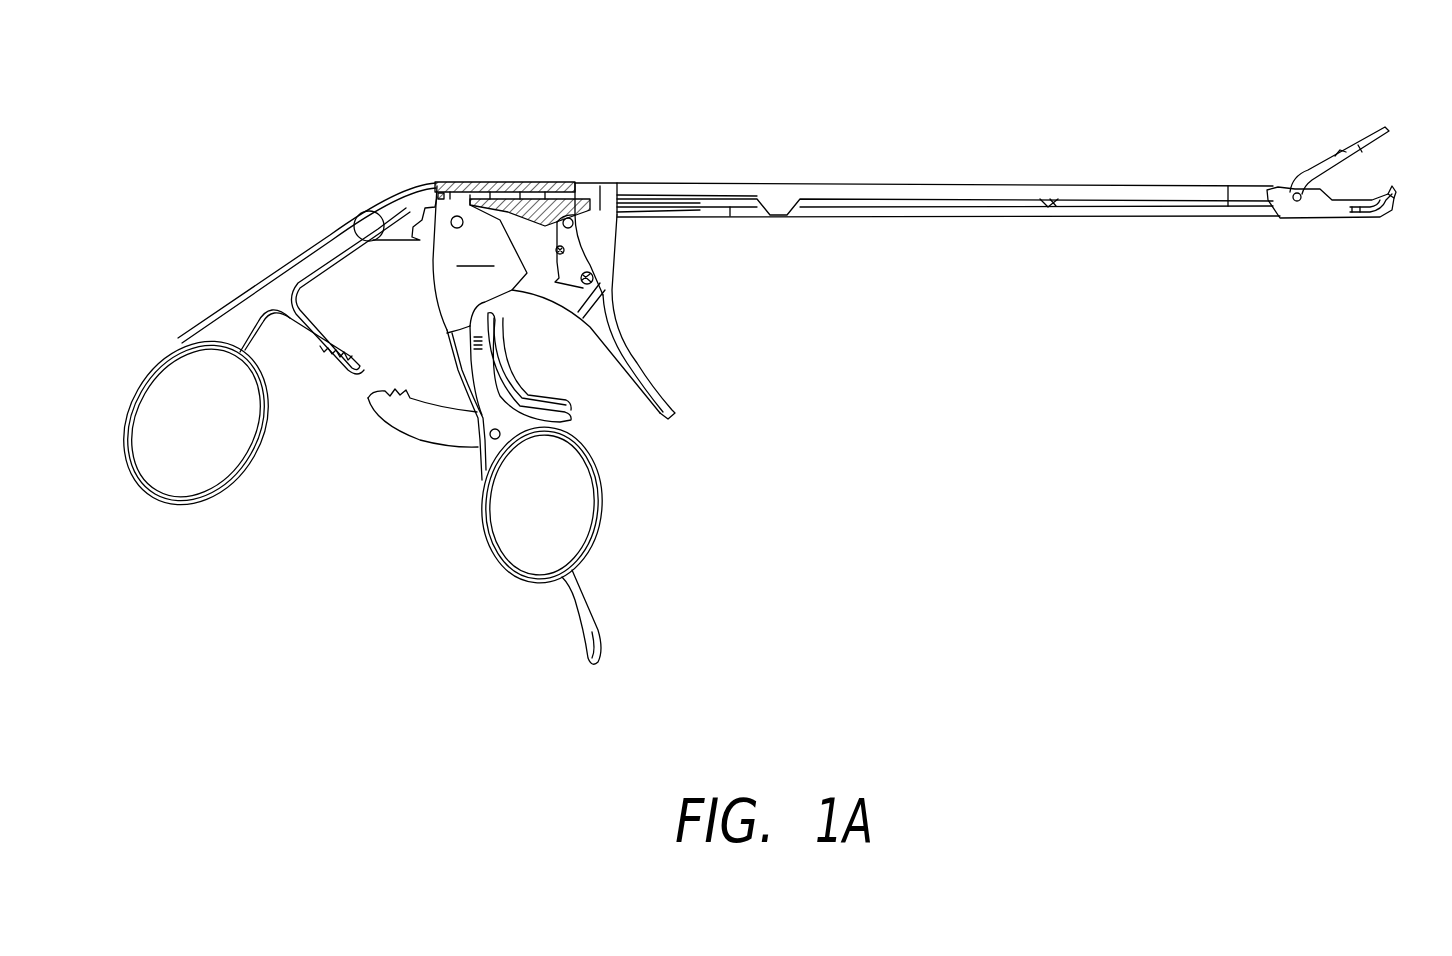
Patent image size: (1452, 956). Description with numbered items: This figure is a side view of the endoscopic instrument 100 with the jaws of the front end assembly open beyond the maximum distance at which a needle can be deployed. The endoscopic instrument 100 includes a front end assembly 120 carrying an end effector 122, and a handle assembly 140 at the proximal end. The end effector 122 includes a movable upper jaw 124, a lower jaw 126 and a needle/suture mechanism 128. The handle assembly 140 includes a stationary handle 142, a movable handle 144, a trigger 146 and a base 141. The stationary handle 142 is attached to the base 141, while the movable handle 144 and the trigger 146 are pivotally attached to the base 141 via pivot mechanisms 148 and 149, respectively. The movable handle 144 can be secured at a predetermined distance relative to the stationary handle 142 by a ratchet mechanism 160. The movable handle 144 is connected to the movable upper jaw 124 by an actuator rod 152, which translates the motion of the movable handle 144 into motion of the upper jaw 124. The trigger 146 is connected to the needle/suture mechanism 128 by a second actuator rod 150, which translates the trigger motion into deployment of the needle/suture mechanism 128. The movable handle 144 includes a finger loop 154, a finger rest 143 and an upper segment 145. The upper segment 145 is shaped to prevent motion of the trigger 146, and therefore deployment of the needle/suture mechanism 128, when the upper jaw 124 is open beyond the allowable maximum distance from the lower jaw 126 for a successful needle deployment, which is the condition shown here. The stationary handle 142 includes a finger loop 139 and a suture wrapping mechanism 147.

The endoscopic instrument 100 is at (428, 142).
The front end assembly 120 is at (962, 160).
The end effector 122 is at (1303, 223).
The movable upper jaw 124 is at (1318, 162).
The lower jaw 126 is at (1328, 216).
The needle/suture mechanism 128 is at (1398, 180).
The finger loop 139 is at (195, 422).
The handle assembly 140 is at (632, 460).
The base 141 is at (505, 183).
The stationary handle 142 is at (222, 330).
The finger rest 143 is at (520, 410).
The movable handle 144 is at (490, 530).
The upper segment 145 is at (450, 258).
The trigger 146 is at (627, 372).
The suture wrapping mechanism 147 is at (366, 227).
The pivot mechanism 148 is at (445, 222).
The pivot mechanism 149 is at (594, 278).
The second actuator rod 150 is at (690, 212).
The actuator rod 152 is at (612, 187).
The finger loop 154 is at (545, 520).
The ratchet mechanism 160 is at (420, 424).